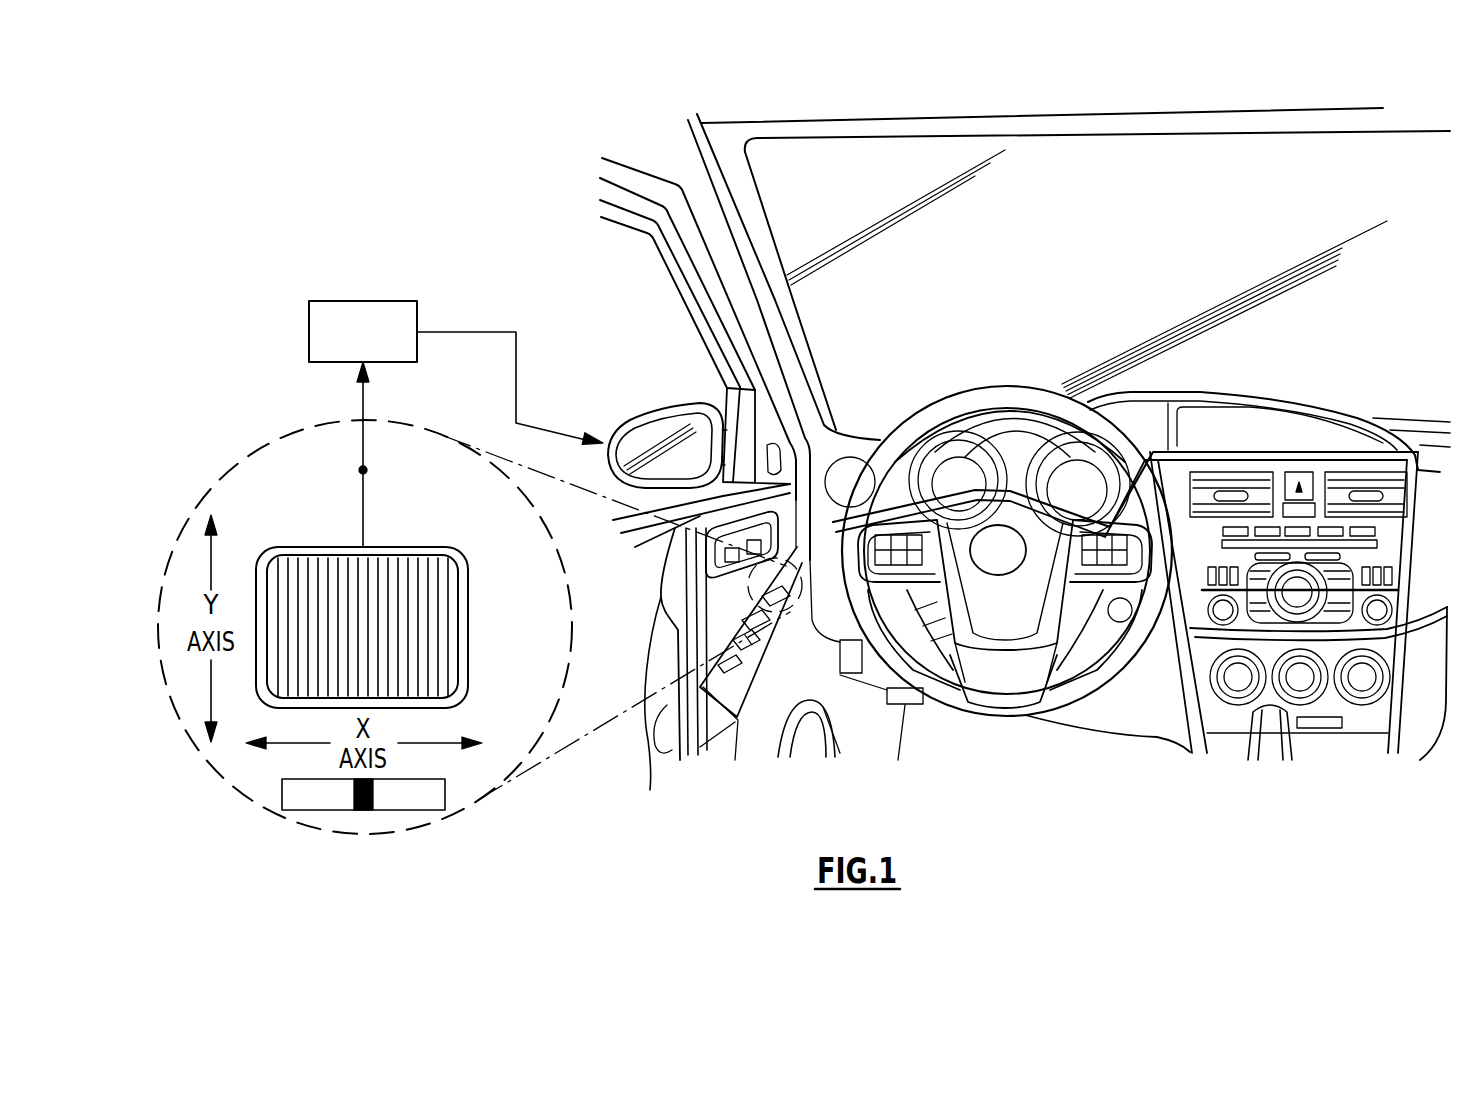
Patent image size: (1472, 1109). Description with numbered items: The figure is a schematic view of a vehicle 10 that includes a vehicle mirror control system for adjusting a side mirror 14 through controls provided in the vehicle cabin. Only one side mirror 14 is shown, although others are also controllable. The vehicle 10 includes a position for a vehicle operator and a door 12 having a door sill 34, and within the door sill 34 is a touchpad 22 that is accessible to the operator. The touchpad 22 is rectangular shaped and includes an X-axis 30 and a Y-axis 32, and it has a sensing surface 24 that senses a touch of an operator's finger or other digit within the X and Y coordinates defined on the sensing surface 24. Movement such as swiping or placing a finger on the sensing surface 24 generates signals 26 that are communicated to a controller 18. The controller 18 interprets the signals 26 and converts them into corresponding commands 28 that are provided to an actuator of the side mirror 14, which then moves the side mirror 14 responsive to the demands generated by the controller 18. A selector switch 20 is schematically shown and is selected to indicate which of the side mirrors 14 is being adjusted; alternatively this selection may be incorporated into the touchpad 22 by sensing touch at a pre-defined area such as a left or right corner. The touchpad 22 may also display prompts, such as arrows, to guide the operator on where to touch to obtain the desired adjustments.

The vehicle 10 is at (1030, 461).
The door 12 is at (668, 700).
The side mirror 14 is at (655, 436).
The controller 18 is at (348, 352).
The selector switch 20 is at (378, 811).
The touchpad 22 is at (490, 630).
The sensing surface 24 is at (407, 608).
The signals 26 is at (363, 470).
The commands 28 is at (516, 378).
The X-axis 30 is at (310, 761).
The Y-axis 32 is at (190, 700).
The door sill 34 is at (790, 645).